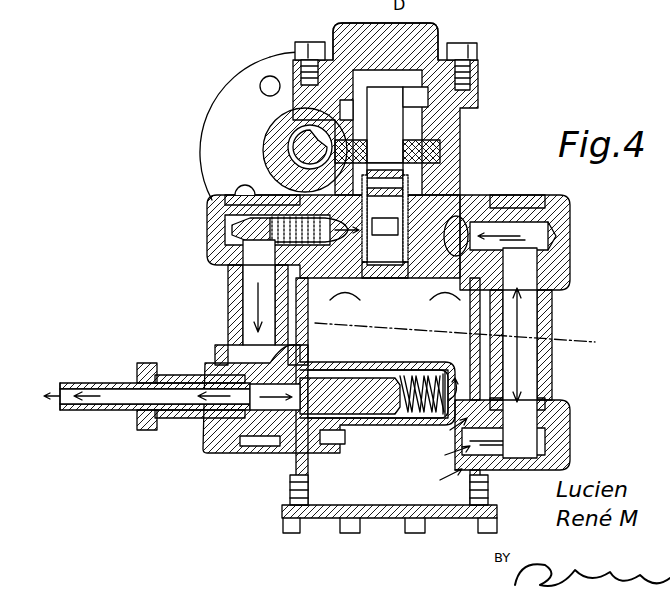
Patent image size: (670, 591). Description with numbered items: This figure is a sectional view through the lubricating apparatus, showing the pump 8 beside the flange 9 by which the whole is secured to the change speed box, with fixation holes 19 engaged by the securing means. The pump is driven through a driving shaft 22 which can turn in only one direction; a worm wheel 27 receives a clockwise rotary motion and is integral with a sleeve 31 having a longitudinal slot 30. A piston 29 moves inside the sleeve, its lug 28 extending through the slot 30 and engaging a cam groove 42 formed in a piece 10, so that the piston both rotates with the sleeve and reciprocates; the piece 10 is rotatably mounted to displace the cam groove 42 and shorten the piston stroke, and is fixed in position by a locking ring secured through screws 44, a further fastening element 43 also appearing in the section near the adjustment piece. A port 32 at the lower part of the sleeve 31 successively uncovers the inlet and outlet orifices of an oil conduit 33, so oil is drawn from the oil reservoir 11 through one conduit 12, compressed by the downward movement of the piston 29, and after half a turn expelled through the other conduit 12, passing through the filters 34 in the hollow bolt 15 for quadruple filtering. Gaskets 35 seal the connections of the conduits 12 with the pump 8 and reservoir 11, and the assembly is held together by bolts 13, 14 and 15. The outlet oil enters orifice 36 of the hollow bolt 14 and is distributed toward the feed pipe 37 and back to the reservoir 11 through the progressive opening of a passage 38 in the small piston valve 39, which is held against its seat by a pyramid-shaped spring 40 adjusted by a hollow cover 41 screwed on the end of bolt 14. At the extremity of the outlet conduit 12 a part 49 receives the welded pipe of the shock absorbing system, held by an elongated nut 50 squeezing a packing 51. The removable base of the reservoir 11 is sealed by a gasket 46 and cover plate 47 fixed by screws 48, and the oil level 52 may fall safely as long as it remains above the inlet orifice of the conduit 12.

The pump 8 is at (266, 54).
The flange 9 is at (228, 132).
The piece 10 is at (423, 40).
The oil reservoir 11 is at (473, 333).
The conduits 12 is at (238, 288).
The bolt 13 is at (558, 232).
The hollow bolt 14 is at (203, 433).
The hollow bolt 15 is at (215, 232).
The fixation holes 19 is at (268, 87).
The driving shaft 22 is at (296, 146).
The worm wheel 27 is at (423, 157).
The lug 28 is at (420, 98).
The piston 29 is at (393, 147).
The longitudinal slot 30 is at (463, 118).
The sleeve 31 is at (384, 226).
The port 32 is at (417, 278).
The oil conduit 33 is at (243, 185).
The filters 34 is at (217, 218).
The gaskets 35 is at (202, 262).
The orifice 36 is at (317, 345).
The feed pipe 37 is at (85, 392).
The passage 38 is at (332, 392).
The small piston valve 39 is at (287, 457).
The pyramid-shaped spring 40 is at (433, 407).
The hollow cover 41 is at (433, 360).
The cam groove 42 is at (346, 100).
The screw 43 is at (470, 70).
The screws 44 is at (297, 48).
The gasket 46 is at (455, 513).
The cover plate 47 is at (327, 515).
The screws 48 is at (355, 522).
The part 49 is at (158, 368).
The elongated nut 50 is at (183, 373).
The packing 51 is at (220, 343).
The level 52 is at (471, 339).